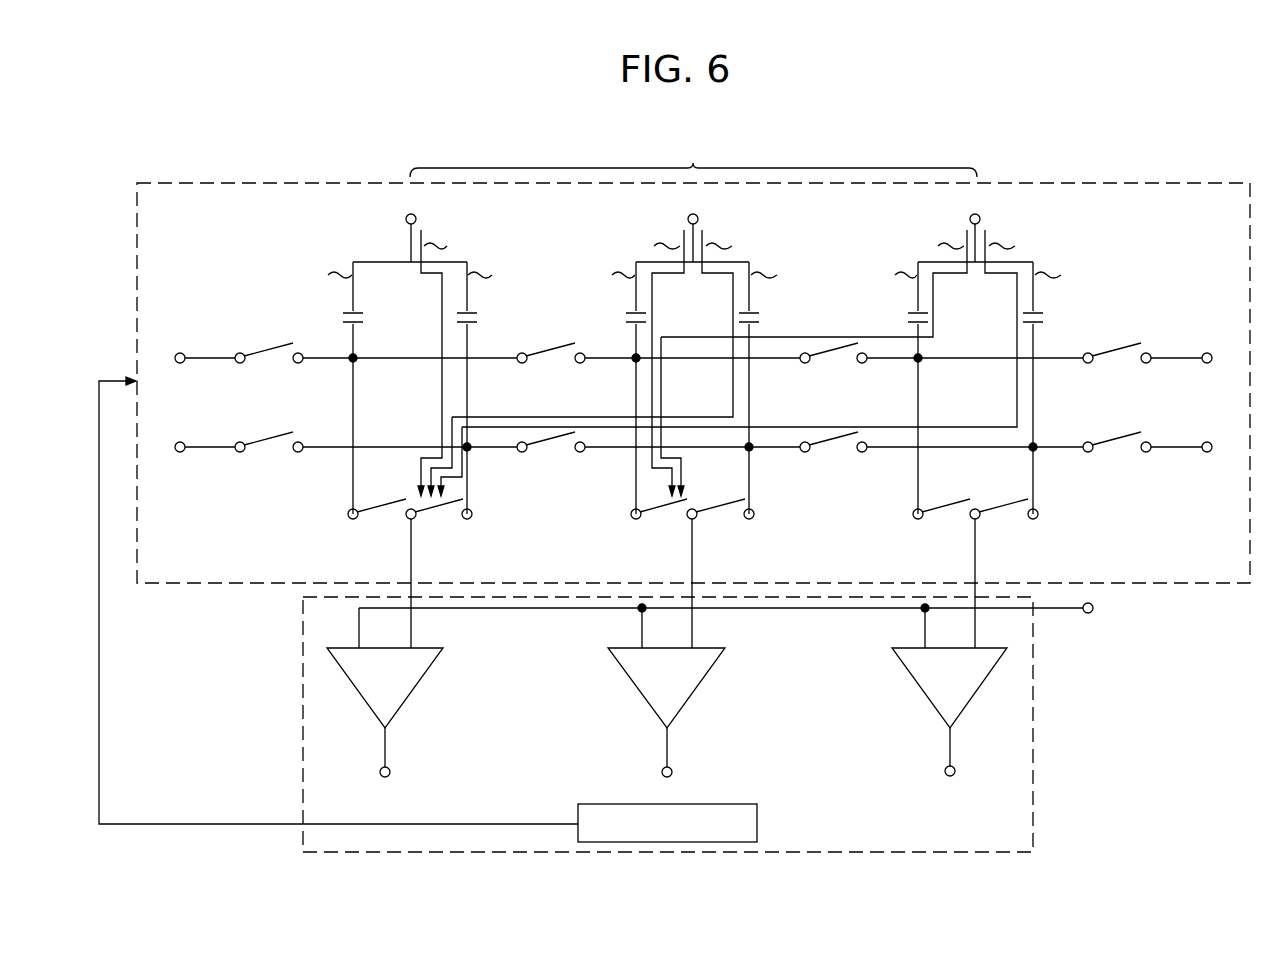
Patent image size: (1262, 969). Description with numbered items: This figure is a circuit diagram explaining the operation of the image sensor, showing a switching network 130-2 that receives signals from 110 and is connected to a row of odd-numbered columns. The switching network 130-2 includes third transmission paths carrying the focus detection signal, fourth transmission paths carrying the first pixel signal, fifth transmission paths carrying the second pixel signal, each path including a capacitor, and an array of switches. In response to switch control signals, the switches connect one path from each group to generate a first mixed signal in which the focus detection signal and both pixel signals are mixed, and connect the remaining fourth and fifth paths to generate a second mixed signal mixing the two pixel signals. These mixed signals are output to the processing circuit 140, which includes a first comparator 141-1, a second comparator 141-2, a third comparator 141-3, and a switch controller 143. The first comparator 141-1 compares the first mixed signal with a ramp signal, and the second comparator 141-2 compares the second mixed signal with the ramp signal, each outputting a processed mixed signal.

The pixel array 110 is at (693, 158).
The switching network 130-2 is at (1096, 183).
The processing circuit 140 is at (1034, 704).
The first comparator 141-1 is at (437, 697).
The second comparator 141-2 is at (610, 697).
The third comparator 141-3 is at (893, 697).
The switch controller 143 is at (758, 822).